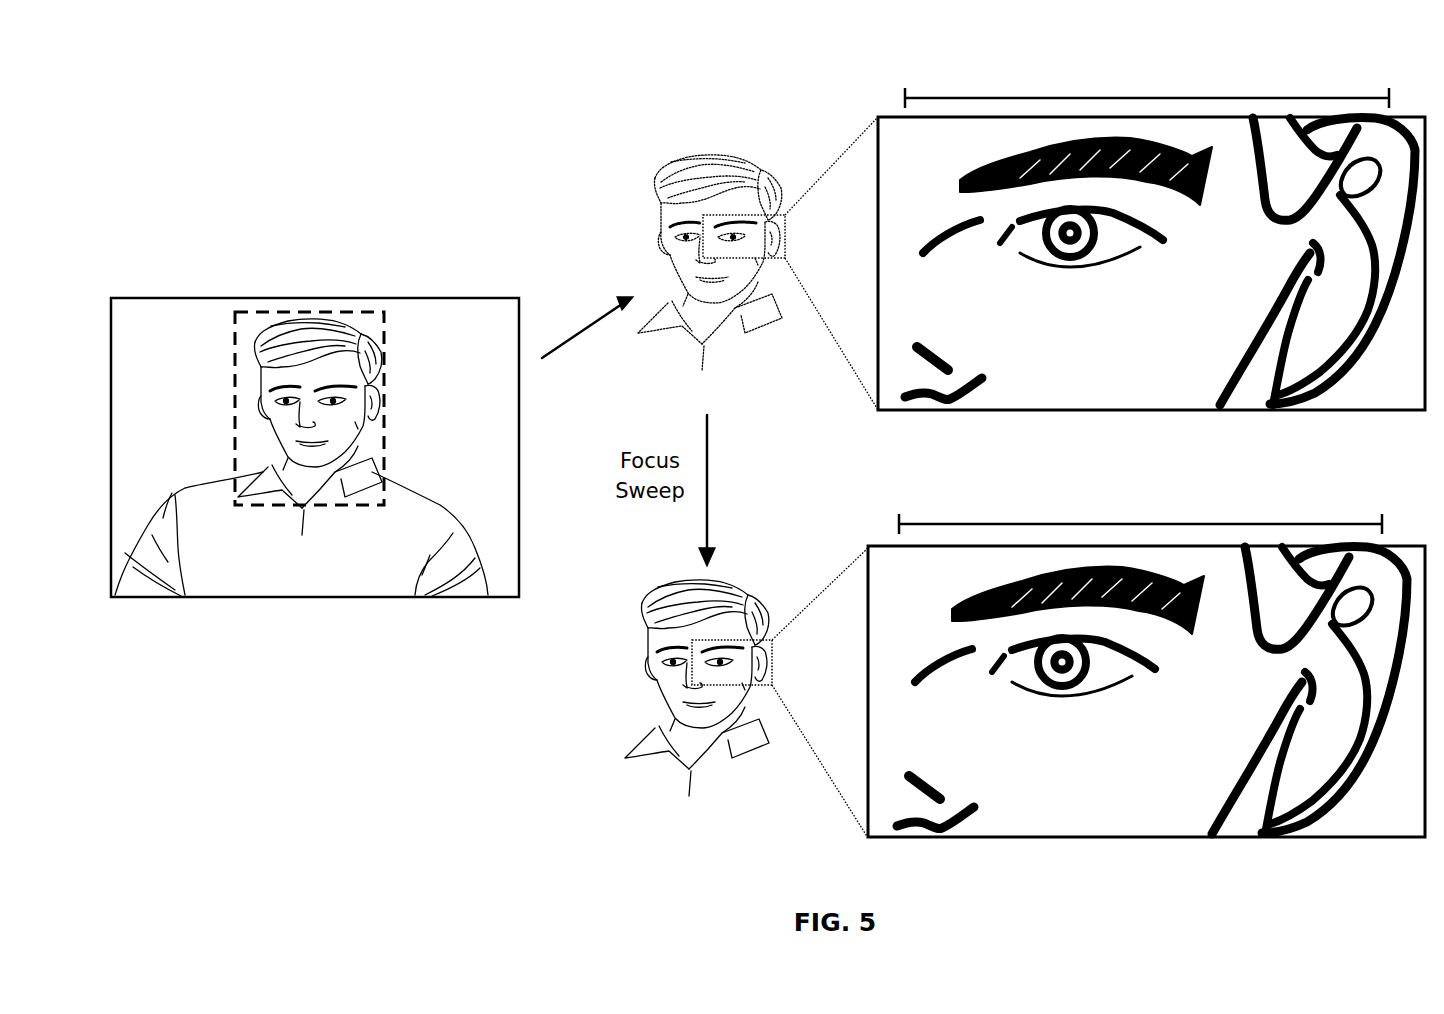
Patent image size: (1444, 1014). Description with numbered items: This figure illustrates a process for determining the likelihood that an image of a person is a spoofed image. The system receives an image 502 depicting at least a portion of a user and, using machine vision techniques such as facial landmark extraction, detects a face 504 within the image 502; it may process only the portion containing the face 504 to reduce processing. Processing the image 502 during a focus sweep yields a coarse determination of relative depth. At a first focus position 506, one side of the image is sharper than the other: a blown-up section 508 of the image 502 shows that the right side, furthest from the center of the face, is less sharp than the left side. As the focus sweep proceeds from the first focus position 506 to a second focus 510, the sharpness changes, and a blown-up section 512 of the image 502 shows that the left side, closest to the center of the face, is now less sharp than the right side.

The image 502 is at (438, 294).
The face 504 is at (310, 312).
The first focus position 506 is at (711, 278).
The section 508 is at (1105, 238).
The second focus 510 is at (698, 705).
The section 512 is at (1098, 661).